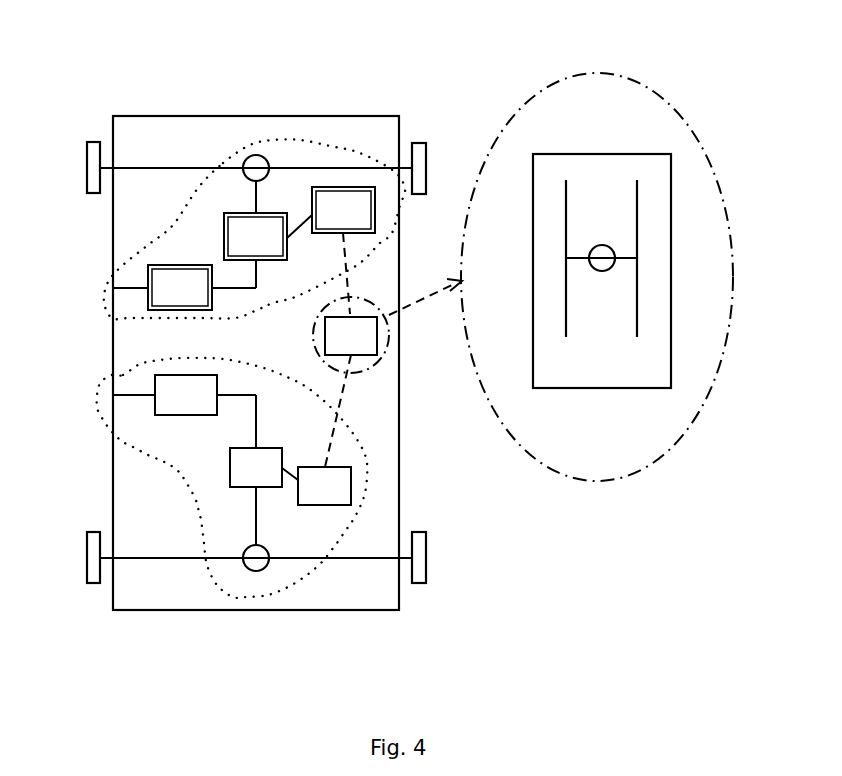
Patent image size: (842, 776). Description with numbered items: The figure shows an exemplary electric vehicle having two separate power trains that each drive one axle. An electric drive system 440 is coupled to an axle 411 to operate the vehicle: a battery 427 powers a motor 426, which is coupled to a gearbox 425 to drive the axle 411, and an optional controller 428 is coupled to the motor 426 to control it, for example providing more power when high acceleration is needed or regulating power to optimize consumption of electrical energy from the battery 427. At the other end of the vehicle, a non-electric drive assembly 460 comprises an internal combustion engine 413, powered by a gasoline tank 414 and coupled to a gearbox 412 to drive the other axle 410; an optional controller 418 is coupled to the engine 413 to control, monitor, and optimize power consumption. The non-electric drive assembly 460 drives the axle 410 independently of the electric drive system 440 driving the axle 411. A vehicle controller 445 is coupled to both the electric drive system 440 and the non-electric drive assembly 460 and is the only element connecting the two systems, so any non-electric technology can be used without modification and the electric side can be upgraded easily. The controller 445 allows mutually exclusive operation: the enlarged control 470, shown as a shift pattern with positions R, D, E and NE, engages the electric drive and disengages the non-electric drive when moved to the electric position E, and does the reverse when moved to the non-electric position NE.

The axle 410 is at (378, 168).
The axle 411 is at (355, 557).
The gearbox 412 is at (257, 155).
The internal combustion engine 413 is at (268, 234).
The gasoline tank 414 is at (184, 287).
The controller 418 is at (343, 250).
The gearbox 425 is at (258, 560).
The motor 426 is at (264, 496).
The battery 427 is at (184, 411).
The controller 428 is at (324, 486).
The electric drive system 440 is at (168, 440).
The vehicle controller 445 is at (387, 373).
The non-electric drive assembly 460 is at (195, 245).
The control 470 is at (602, 247).